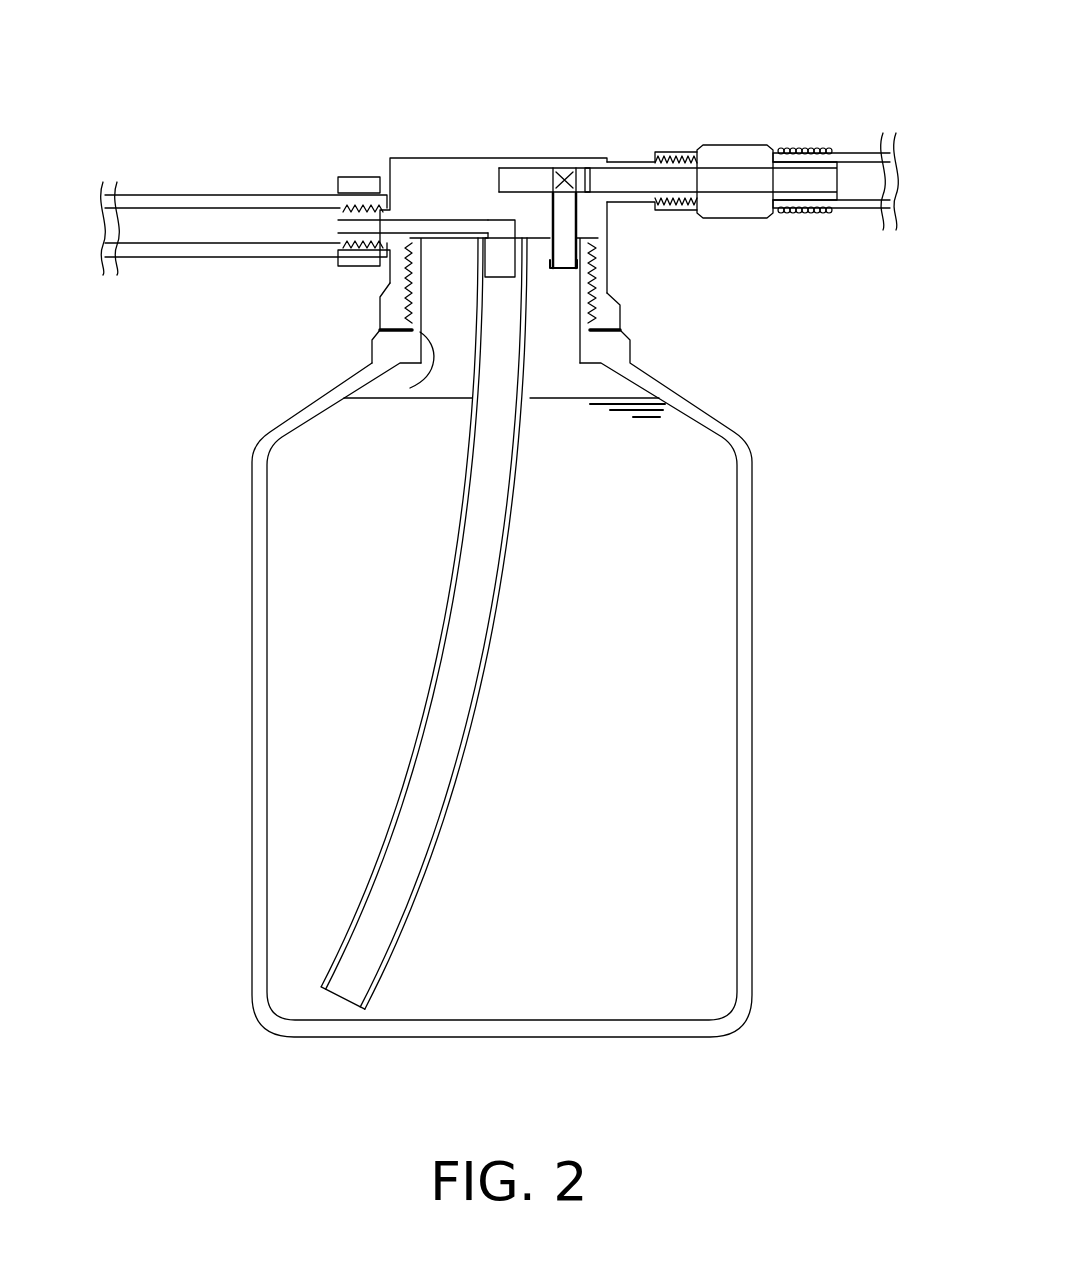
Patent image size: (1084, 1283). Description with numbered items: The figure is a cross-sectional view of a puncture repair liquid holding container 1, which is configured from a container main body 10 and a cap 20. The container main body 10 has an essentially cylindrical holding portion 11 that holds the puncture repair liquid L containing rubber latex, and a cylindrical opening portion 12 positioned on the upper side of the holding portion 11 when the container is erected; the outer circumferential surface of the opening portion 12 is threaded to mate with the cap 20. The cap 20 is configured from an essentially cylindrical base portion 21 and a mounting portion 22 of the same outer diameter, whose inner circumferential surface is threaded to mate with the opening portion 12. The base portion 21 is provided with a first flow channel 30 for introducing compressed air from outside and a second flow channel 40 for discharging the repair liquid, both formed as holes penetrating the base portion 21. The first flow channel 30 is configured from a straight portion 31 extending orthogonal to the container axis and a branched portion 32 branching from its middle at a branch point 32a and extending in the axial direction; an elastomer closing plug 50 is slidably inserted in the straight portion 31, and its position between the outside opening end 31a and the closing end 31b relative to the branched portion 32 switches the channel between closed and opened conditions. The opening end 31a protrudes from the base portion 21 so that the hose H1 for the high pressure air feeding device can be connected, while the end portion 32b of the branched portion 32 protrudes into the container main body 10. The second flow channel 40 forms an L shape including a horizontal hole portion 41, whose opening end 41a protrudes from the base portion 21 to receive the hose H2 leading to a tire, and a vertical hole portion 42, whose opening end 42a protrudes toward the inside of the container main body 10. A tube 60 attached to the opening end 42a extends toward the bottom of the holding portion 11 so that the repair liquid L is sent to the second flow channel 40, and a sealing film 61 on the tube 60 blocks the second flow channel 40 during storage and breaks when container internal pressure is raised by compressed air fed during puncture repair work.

The puncture repair liquid holding container 1 is at (497, 99).
The container main body 10 is at (762, 718).
The holding portion 11 is at (744, 575).
The opening portion 12 is at (413, 330).
The cap 20 is at (412, 143).
The base portion 21 is at (446, 190).
The mounting portion 22 is at (606, 294).
The first flow channel 30 is at (760, 238).
The straight portion 31 is at (622, 184).
The opening end of straight portion 31a is at (693, 184).
The closing end of straight portion 31b is at (508, 173).
The branched portion 32 is at (563, 230).
The branch point of branched portion 32a is at (592, 170).
The end portion of branched portion 32b is at (562, 272).
The second flow channel 40 is at (275, 262).
The horizontal hole portion 41 is at (492, 253).
The opening end of horizontal hole portion 41a is at (345, 213).
The vertical hole portion 42 is at (478, 266).
The opening end of vertical hole portion 42a is at (377, 357).
The closing plug 50 is at (562, 170).
The tube 60 is at (438, 658).
The sealing film 61 is at (338, 997).
The puncture repair liquid L is at (670, 442).
The hose H1 is at (842, 158).
The hose H2 is at (233, 200).